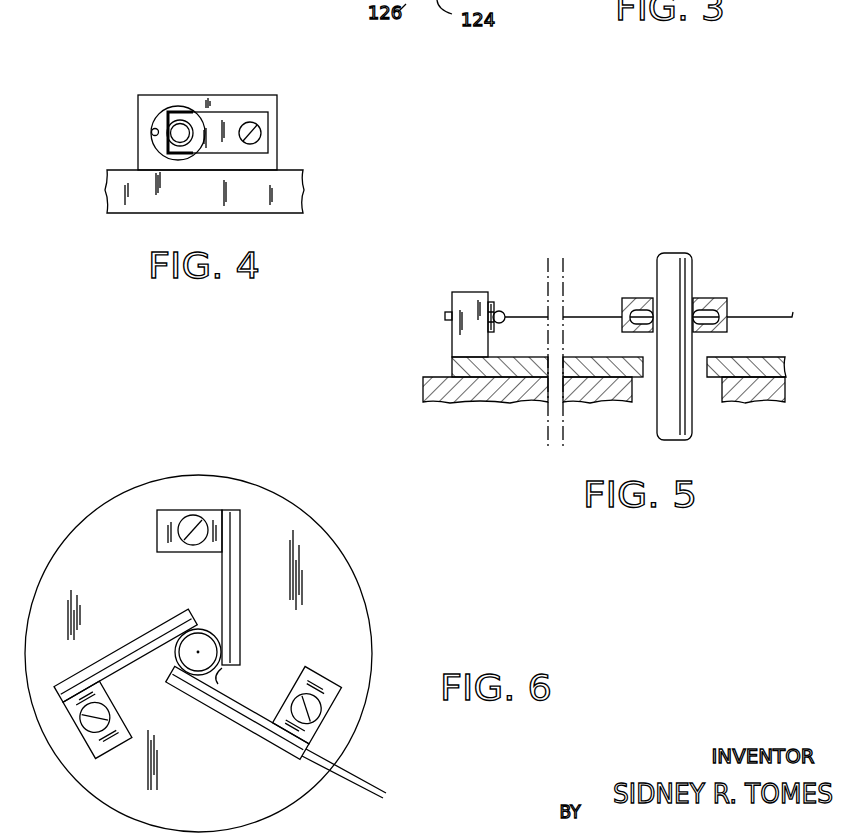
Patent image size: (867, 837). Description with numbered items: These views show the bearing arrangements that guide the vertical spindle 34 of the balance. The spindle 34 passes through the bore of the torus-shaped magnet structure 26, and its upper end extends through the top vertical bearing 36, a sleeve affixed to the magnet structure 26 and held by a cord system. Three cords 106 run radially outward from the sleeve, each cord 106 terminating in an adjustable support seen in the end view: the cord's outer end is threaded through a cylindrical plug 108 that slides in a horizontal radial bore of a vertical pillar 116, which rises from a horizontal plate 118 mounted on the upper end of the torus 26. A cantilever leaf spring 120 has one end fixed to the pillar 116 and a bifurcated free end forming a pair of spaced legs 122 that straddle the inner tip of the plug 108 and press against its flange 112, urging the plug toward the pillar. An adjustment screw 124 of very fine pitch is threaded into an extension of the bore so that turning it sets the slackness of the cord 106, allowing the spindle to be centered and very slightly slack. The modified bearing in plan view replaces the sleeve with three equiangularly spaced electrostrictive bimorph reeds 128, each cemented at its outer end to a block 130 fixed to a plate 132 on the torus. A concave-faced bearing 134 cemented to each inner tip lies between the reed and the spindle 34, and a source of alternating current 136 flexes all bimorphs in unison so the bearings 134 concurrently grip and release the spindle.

In FIG. 5, the magnet structure 26 is at (423, 392).
In FIG. 5, the spindle 34 is at (692, 265).
In FIG. 6, the spindle 34 is at (200, 640).
In FIG. 5, the top vertical bearing 36 is at (727, 300).
In FIG. 4, the cord 106 is at (170, 115).
In FIG. 5, the cord 106 is at (787, 313).
In FIG. 4, the cylindrical plug 108 is at (182, 128).
In FIG. 5, the cylindrical plug 108 is at (502, 310).
In FIG. 4, the flange 112 is at (158, 117).
In FIG. 5, the flange 112 is at (490, 305).
In FIG. 4, the vertical pillar 116 is at (143, 157).
In FIG. 5, the vertical pillar 116 is at (455, 300).
In FIG. 4, the horizontal plate 118 is at (297, 198).
In FIG. 5, the horizontal plate 118 is at (777, 367).
In FIG. 4, the cantilever leaf spring 120 is at (233, 123).
In FIG. 4, the spaced legs 122 is at (175, 110).
In FIG. 5, the spaced legs 122 is at (495, 303).
In FIG. 5, the adjustment screw 124 is at (447, 317).
In FIG. 6, the reed 128 is at (232, 718).
In FIG. 6, the block 130 is at (212, 518).
In FIG. 6, the plate 132 is at (298, 522).
In FIG. 6, the bearing 134 is at (223, 677).
In FIG. 6, the source of alternating current 136 is at (387, 795).